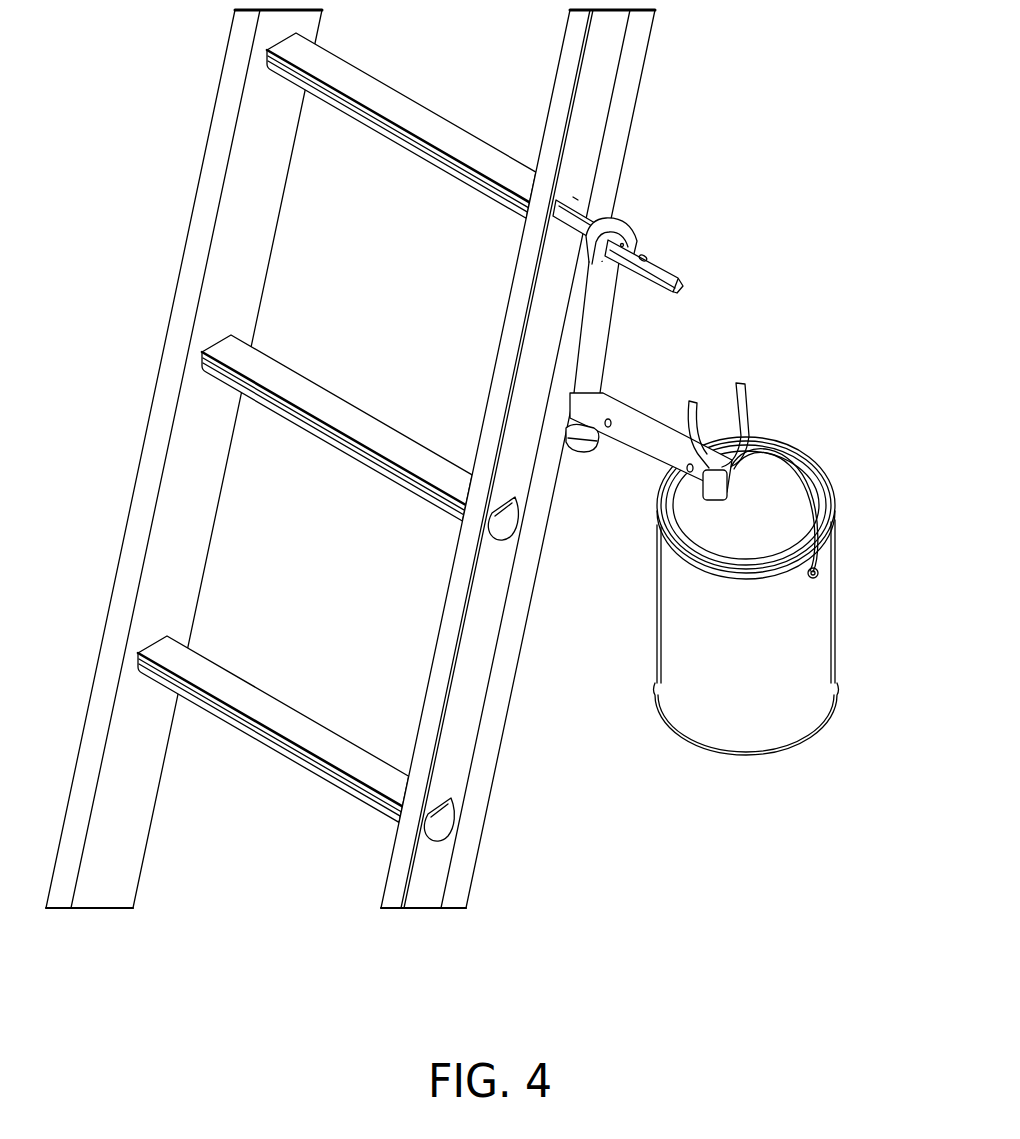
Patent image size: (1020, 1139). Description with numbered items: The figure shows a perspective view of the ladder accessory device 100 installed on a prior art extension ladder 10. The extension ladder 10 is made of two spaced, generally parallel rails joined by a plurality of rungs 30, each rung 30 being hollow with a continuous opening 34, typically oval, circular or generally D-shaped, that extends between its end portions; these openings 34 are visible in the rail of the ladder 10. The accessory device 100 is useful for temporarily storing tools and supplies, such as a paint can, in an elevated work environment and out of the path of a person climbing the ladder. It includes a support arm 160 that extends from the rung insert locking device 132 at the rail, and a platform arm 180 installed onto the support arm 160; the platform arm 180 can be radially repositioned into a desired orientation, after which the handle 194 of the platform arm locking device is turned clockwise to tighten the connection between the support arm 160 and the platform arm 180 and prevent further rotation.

The extension ladder 10 is at (350, 459).
The rung 30 is at (417, 97).
The continuous opening 34 is at (497, 524).
The ladder accessory device 100 is at (610, 363).
The rung insert locking device 132 is at (668, 272).
The support arm 160 is at (620, 307).
The platform arm 180 is at (647, 462).
The handle 194 is at (585, 452).